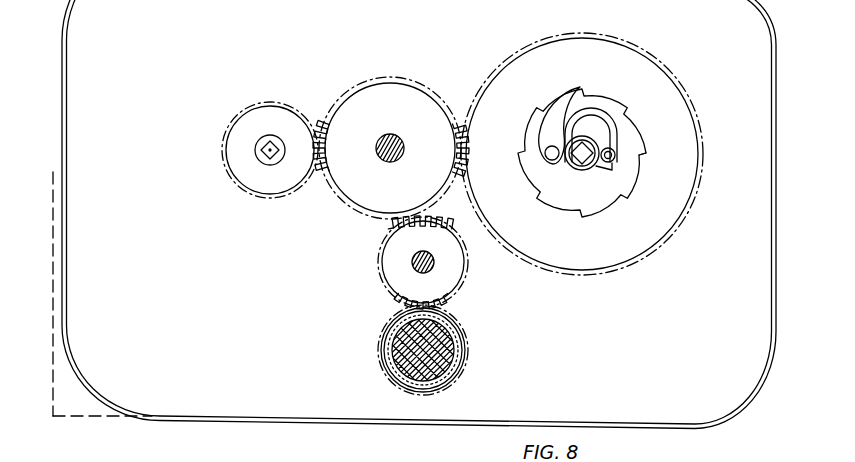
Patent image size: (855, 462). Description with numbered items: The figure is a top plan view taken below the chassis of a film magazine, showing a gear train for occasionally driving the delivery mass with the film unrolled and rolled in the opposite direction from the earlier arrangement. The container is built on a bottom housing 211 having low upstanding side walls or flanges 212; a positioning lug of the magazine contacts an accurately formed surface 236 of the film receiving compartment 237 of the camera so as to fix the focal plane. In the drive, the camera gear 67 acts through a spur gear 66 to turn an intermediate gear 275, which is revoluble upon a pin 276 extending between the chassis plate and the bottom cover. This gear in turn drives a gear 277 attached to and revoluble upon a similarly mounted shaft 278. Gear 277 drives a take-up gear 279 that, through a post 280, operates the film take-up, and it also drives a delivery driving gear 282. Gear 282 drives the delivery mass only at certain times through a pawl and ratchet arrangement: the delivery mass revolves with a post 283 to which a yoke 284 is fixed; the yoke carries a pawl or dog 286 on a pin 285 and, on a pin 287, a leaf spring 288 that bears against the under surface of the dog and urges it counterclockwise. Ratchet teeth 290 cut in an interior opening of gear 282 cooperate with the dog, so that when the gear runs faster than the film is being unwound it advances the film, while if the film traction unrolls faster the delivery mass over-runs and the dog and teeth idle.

The spur gear 66 is at (392, 370).
The camera gear 67 is at (462, 361).
The bottom housing 211 is at (418, 212).
The side walls or flanges 212 is at (777, 311).
The accurately formed surface 236 is at (53, 402).
The film receiving compartment 237 is at (88, 399).
The intermediate gear 275 is at (452, 297).
The pin 276 is at (433, 266).
The gear 277 is at (391, 153).
The shaft 278 is at (404, 150).
The take-up gear 279 is at (270, 151).
The post 280 is at (258, 152).
The delivery driving gear 282 is at (582, 154).
The post 283 is at (588, 170).
The yoke 284 is at (608, 172).
The pin 285 is at (548, 158).
The pawl or dog 286 is at (560, 109).
The pin 287 is at (620, 152).
The leaf spring 288 is at (613, 125).
The ratchet teeth 290 is at (644, 153).